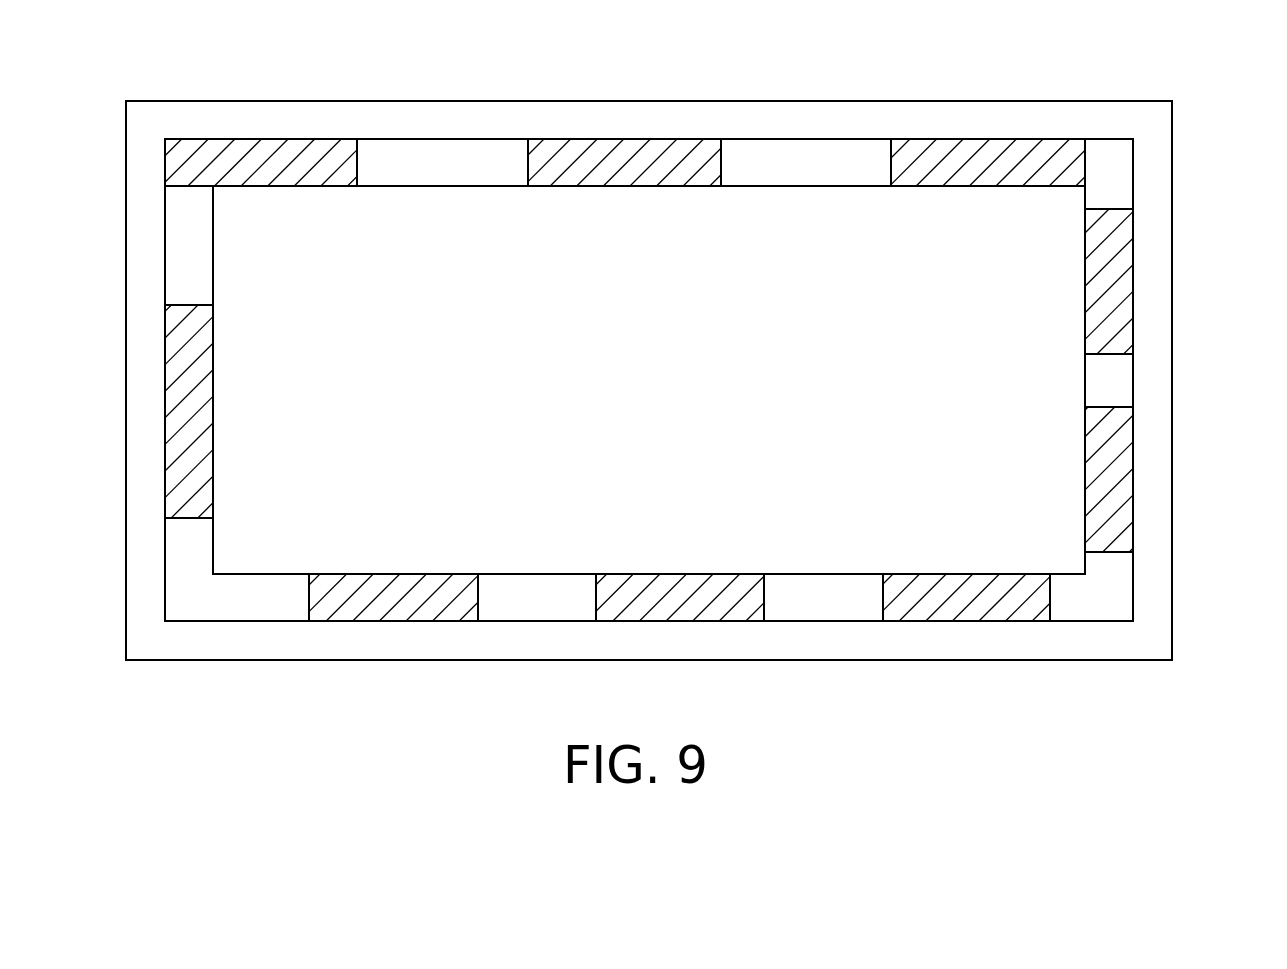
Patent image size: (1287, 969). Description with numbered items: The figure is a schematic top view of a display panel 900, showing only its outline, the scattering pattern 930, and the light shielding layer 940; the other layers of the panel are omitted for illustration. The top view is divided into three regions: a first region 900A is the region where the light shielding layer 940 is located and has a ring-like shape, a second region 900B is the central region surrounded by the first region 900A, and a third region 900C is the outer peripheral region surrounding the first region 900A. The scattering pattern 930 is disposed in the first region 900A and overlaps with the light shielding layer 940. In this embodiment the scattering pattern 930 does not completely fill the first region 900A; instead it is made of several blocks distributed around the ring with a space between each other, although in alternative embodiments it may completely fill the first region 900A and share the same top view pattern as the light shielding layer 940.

The display panel 900 is at (1275, 731).
The first region 900A is at (840, 163).
The second region 900B is at (993, 248).
The third region 900C is at (1148, 278).
The scattering pattern 930 is at (1120, 467).
The light shielding layer 940 is at (1120, 373).